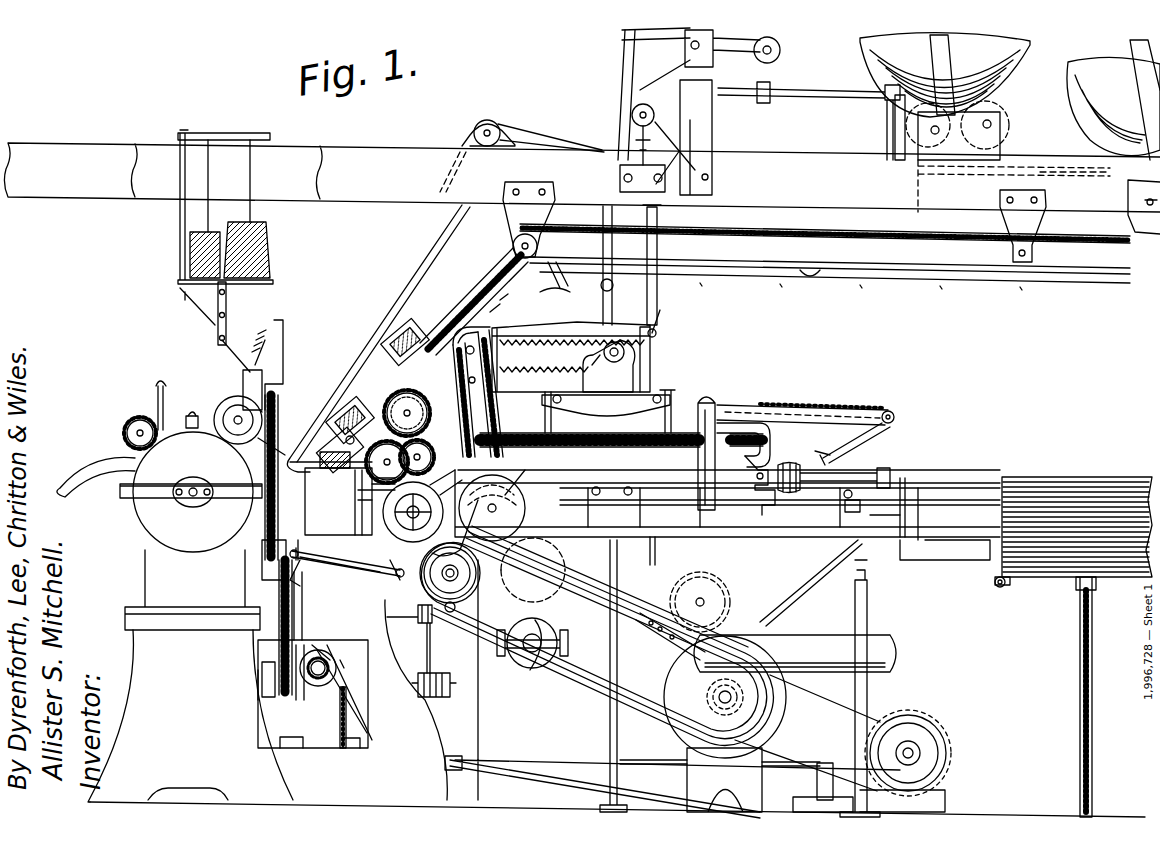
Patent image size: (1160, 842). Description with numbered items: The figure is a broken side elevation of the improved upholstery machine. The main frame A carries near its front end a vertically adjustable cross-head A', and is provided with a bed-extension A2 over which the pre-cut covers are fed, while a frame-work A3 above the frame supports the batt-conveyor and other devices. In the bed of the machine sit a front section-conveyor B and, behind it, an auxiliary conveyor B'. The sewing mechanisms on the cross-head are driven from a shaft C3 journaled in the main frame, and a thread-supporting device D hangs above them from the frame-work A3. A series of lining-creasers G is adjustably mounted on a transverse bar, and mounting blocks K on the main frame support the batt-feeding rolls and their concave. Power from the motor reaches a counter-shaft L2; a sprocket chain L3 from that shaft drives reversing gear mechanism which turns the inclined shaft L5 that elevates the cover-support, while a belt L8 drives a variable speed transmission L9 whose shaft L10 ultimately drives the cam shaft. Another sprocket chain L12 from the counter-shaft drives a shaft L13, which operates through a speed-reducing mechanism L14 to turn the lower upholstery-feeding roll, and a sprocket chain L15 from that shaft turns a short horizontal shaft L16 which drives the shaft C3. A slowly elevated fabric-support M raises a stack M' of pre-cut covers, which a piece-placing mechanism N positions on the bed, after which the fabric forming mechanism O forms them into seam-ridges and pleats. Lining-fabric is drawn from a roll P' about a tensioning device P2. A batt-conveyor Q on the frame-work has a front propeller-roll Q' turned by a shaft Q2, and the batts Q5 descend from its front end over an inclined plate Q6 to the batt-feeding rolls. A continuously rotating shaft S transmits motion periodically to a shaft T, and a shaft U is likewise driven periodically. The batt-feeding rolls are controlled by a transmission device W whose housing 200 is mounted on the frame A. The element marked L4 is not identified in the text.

The main frame A is at (616, 683).
The cross-head A' is at (261, 346).
The bed-extension A2 is at (877, 593).
The frame-work A3 is at (378, 338).
The front section-conveyor B is at (650, 658).
The auxiliary conveyor B' is at (811, 583).
The shaft C3 is at (230, 410).
The thread-supporting device D is at (169, 265).
The lining-creasers G is at (365, 400).
The mounting blocks K is at (450, 438).
The counter-shaft L2 is at (312, 700).
The sprocket chain L3 is at (350, 722).
The belt L4 is at (333, 672).
The inclined shaft L5 is at (547, 780).
The belt L8 is at (433, 668).
The variable speed transmission L9 is at (340, 685).
The shaft L10 is at (306, 640).
The sprocket chain L12 is at (290, 600).
The shaft L13 is at (270, 570).
The speed-reducing mechanism L14 is at (150, 518).
The sprocket chain L15 is at (258, 510).
The short horizontal shaft L16 is at (282, 400).
The fabric-support M is at (1045, 697).
The stack of pre-cut covers M' is at (1077, 502).
The piece-placing mechanism N is at (785, 410).
The fabric forming mechanism O is at (634, 322).
The roll P' is at (939, 96).
The tensioning device P2 is at (665, 92).
The batt-conveyor Q is at (810, 287).
The front propeller-roll Q' is at (825, 257).
The shaft Q2 is at (568, 286).
The batts Q5 is at (486, 280).
The inclined plate Q6 is at (545, 292).
The shaft S is at (458, 573).
The shaft T is at (420, 505).
The shaft U is at (500, 515).
The transmission device W is at (318, 490).
The housing 200 is at (338, 555).